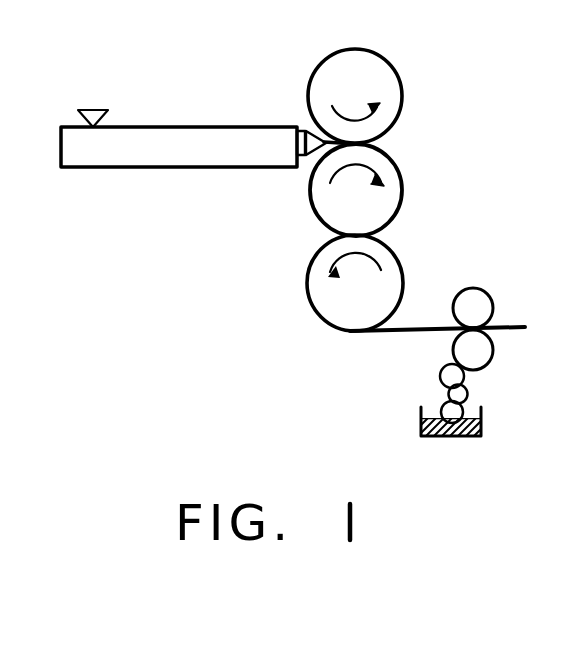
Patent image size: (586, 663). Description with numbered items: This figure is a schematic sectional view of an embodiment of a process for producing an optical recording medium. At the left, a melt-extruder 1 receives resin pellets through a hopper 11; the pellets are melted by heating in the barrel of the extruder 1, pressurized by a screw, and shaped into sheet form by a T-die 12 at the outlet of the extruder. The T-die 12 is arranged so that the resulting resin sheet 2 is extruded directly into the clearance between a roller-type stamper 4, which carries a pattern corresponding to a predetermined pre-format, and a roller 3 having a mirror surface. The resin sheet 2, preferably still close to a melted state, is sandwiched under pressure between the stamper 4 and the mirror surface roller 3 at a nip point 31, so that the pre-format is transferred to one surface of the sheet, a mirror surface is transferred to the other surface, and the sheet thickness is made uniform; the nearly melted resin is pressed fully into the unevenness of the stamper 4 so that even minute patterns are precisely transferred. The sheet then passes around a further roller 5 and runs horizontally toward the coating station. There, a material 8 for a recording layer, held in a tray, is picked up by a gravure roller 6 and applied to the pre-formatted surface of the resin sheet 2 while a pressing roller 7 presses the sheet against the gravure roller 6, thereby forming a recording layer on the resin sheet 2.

The melt-extruder 1 is at (152, 157).
The hopper 11 is at (101, 110).
The T-die 12 is at (325, 143).
The resin sheet 2 is at (320, 150).
The roller having a mirror surface 3 is at (383, 81).
The nip point 31 is at (353, 139).
The roller-type stamper 4 is at (392, 197).
The lower roller 5 is at (387, 284).
The gravure roller 6 is at (480, 358).
The pressing roller 7 is at (480, 300).
The material for a recording layer 8 is at (484, 425).